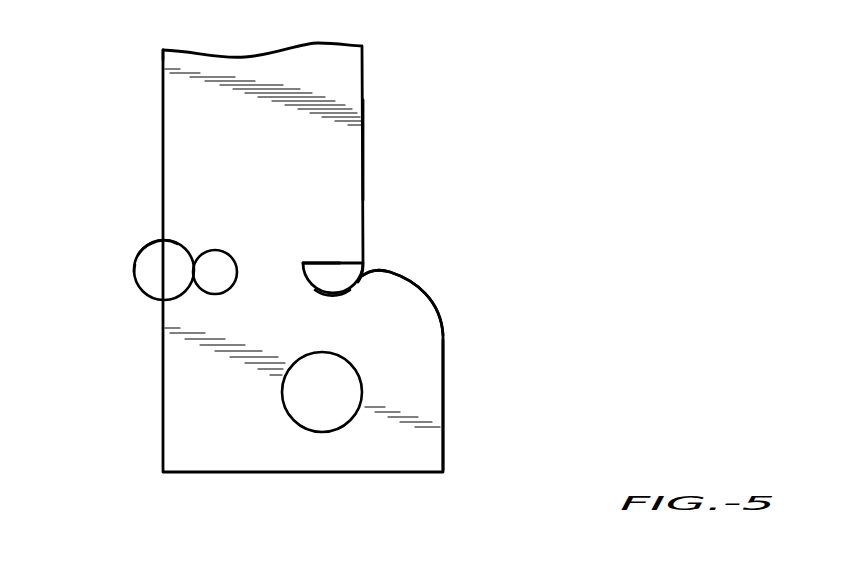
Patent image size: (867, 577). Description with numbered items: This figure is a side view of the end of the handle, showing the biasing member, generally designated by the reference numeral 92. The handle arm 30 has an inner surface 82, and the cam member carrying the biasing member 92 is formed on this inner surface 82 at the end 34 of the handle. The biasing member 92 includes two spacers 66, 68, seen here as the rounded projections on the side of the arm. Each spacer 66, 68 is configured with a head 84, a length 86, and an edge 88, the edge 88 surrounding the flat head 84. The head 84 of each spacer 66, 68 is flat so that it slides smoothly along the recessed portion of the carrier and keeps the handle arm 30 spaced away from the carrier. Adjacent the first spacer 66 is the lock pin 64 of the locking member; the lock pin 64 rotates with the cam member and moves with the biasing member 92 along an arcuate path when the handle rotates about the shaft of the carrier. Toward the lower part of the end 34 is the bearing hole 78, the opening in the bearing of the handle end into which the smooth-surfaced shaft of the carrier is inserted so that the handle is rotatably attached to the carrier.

The biasing member 92 is at (134, 31).
The handle arm 30 is at (345, 63).
The inner surface 82 is at (340, 155).
The end 34 is at (444, 405).
The spacer 66 is at (142, 247).
The lock pin 64 is at (213, 250).
The head 84 is at (166, 238).
The length 86 is at (153, 240).
The edge 88 is at (137, 265).
The spacer 68 is at (360, 282).
The bearing hole 78 is at (336, 410).